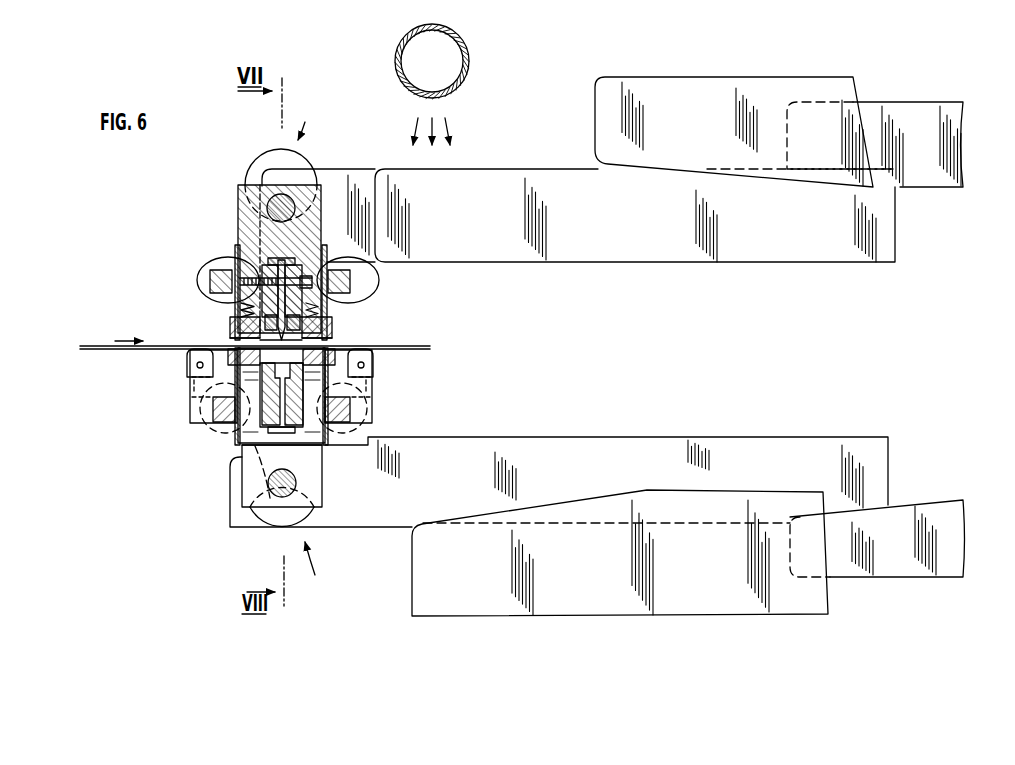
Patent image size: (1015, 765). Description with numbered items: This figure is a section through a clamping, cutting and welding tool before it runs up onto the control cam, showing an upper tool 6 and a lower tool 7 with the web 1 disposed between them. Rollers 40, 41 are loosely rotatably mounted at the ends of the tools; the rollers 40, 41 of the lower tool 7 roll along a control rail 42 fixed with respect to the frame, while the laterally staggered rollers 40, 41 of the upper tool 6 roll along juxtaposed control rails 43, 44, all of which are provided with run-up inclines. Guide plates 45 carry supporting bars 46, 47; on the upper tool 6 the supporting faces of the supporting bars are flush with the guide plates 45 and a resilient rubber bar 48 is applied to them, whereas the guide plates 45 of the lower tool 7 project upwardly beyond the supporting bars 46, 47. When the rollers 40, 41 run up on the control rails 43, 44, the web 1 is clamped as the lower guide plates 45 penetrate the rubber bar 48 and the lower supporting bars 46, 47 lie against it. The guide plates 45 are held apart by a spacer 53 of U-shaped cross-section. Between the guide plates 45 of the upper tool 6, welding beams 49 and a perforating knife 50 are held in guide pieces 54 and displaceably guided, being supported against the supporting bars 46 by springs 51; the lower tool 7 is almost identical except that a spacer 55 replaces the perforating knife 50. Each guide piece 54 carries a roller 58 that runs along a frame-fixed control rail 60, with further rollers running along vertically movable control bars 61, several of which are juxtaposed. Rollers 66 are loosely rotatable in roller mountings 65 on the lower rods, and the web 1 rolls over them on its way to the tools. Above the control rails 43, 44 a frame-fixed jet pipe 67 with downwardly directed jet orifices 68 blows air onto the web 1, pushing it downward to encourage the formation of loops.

The web 1 is at (92, 345).
The upper tool 6 is at (304, 118).
The lower tool 7 is at (313, 568).
The roller 40 is at (199, 278).
The roller 41 is at (358, 278).
The control rail 42 is at (472, 445).
The control rail 43 is at (328, 178).
The control rail 44 is at (478, 177).
The guide plate 45 is at (237, 248).
The supporting bar 46 is at (203, 377).
The supporting bar 47 is at (232, 351).
The resilient rubber bar 48 is at (332, 334).
The welding beam 49 is at (243, 307).
The perforating knife 50 is at (262, 262).
The spring 51 is at (262, 298).
The spacer 53 is at (280, 443).
The guide piece 54 is at (236, 195).
The spacer 55 is at (260, 447).
The roller 58 is at (282, 178).
The control rail 60 is at (657, 86).
The control bar 61 is at (910, 105).
The roller mounting 65 is at (213, 398).
The roller 66 is at (186, 362).
The jet pipe 67 is at (468, 63).
The jet orifice 68 is at (440, 95).